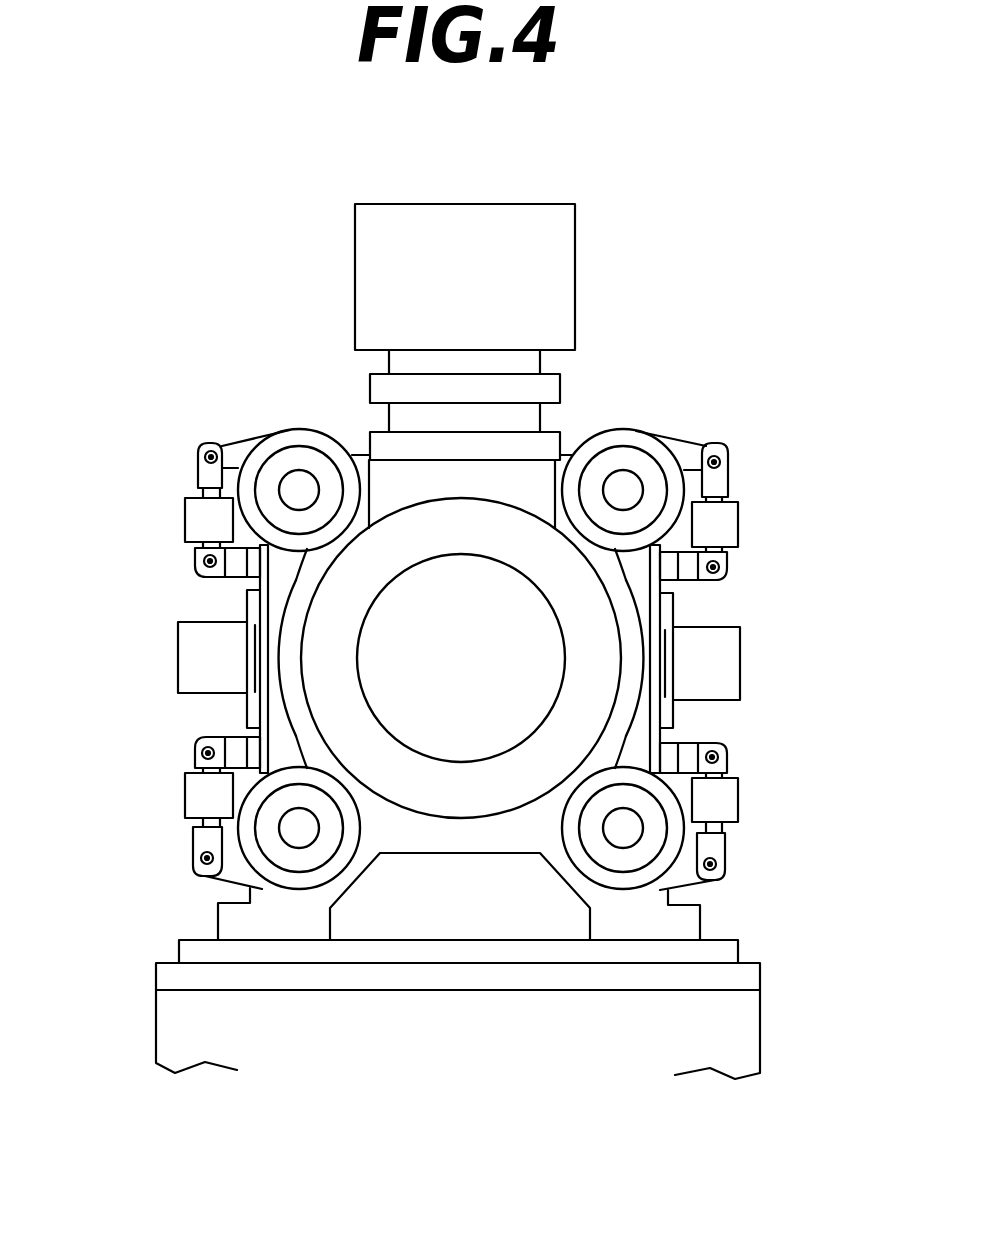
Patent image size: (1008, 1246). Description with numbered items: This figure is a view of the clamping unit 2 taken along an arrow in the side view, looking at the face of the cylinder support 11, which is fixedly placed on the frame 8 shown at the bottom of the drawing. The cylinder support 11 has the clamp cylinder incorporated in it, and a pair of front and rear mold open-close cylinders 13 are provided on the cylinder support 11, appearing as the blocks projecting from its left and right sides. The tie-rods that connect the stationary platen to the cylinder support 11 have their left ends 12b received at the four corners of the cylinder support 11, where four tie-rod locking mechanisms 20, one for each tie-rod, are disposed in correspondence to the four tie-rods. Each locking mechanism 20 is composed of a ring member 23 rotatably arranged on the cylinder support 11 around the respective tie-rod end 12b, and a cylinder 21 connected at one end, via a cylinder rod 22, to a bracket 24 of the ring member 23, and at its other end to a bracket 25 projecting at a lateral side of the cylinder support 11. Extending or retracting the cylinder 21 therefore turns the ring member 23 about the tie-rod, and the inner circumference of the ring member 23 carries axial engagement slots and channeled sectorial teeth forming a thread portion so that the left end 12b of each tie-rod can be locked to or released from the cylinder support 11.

The clamping unit 2 is at (502, 519).
The frame 8 is at (727, 952).
The cylinder support 11 is at (392, 487).
The left ends of tie-rods 12b is at (627, 463).
The mold open-close cylinders 13 is at (192, 648).
The tie-rod locking mechanisms 20 is at (502, 622).
The cylinder 21 is at (715, 527).
The cylinder rod 22 is at (728, 477).
The ring member 23 is at (687, 465).
The bracket of the ring member 24 is at (678, 445).
The bracket 25 is at (752, 555).